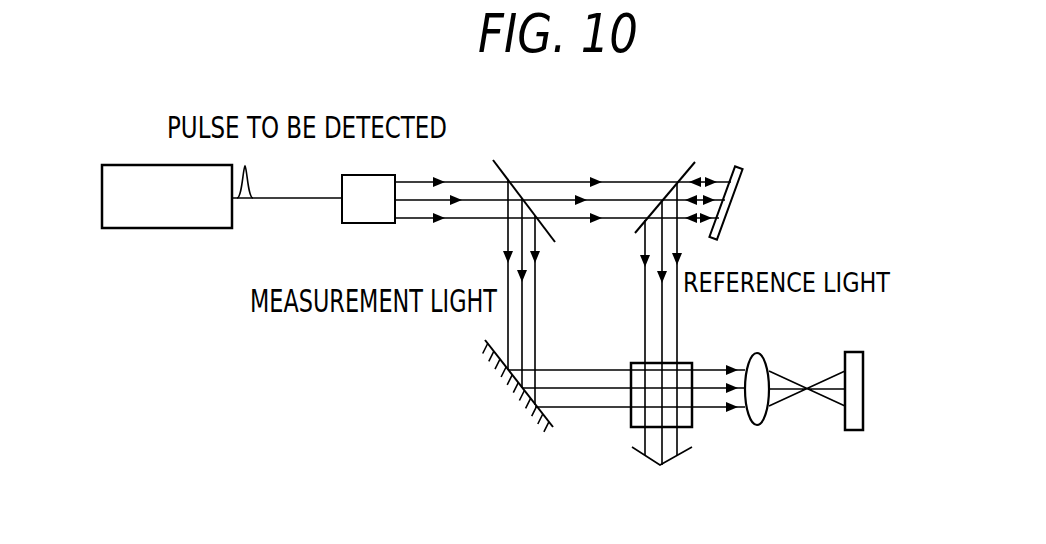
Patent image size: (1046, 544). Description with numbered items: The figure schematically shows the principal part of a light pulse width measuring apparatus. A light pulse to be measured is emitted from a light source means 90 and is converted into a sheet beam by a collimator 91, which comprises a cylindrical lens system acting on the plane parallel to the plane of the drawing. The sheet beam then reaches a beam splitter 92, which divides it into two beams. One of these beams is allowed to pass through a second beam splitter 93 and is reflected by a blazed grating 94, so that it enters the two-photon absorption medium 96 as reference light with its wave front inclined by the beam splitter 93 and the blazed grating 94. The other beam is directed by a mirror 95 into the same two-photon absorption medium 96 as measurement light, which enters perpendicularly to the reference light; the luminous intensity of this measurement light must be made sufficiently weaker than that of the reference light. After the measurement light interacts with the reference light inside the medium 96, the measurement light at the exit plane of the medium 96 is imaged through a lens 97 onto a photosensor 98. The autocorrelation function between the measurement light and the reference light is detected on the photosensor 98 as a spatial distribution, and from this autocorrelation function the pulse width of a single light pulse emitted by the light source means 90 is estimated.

The light source means 90 is at (115, 229).
The collimator 91 is at (352, 224).
The beam splitter 92 is at (499, 163).
The beam splitter 93 is at (690, 163).
The blazed grating 94 is at (742, 166).
The mirror 95 is at (520, 408).
The two-photon absorption medium 96 is at (694, 428).
The lens 97 is at (760, 426).
The photosensor 98 is at (858, 431).